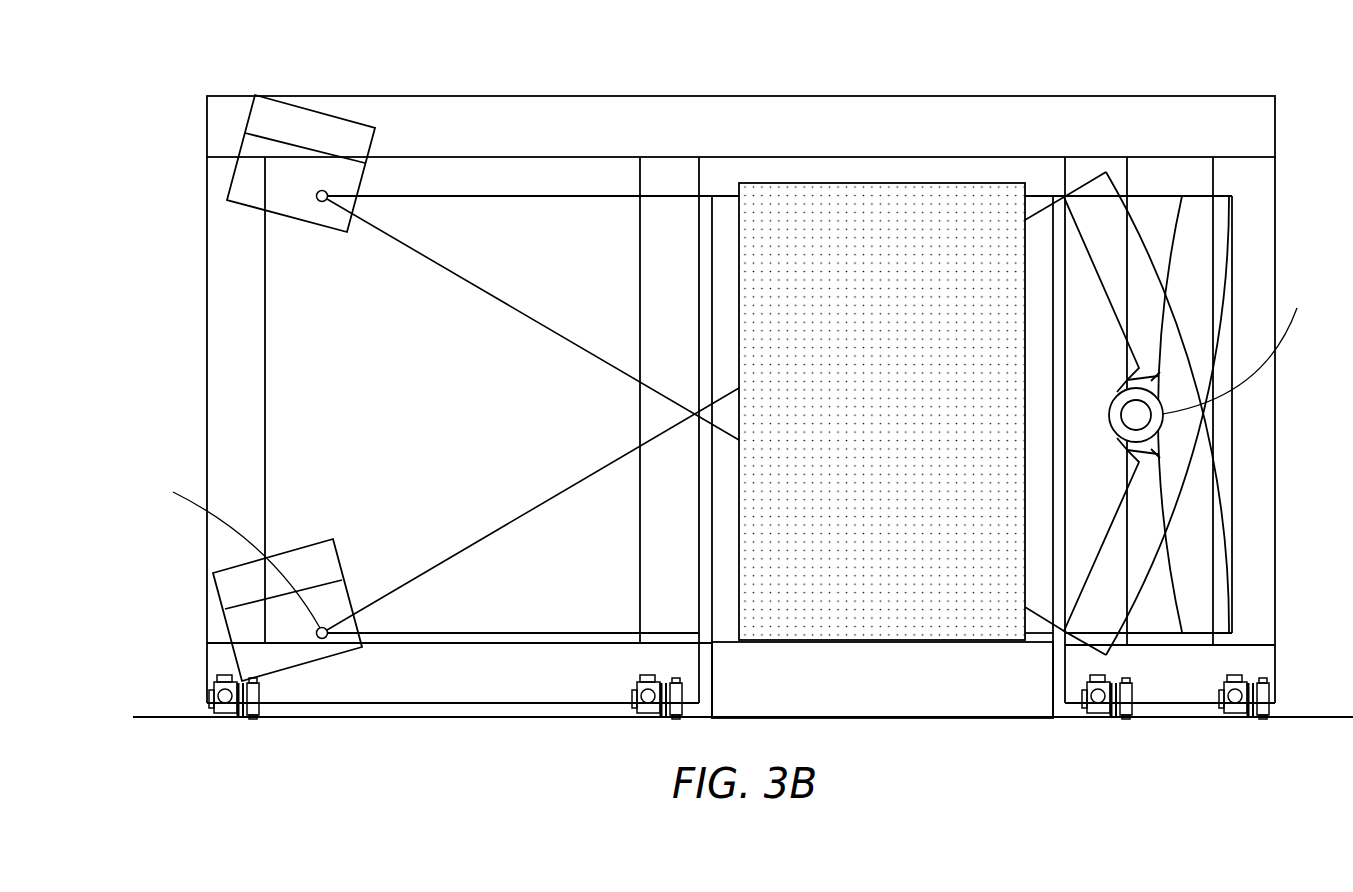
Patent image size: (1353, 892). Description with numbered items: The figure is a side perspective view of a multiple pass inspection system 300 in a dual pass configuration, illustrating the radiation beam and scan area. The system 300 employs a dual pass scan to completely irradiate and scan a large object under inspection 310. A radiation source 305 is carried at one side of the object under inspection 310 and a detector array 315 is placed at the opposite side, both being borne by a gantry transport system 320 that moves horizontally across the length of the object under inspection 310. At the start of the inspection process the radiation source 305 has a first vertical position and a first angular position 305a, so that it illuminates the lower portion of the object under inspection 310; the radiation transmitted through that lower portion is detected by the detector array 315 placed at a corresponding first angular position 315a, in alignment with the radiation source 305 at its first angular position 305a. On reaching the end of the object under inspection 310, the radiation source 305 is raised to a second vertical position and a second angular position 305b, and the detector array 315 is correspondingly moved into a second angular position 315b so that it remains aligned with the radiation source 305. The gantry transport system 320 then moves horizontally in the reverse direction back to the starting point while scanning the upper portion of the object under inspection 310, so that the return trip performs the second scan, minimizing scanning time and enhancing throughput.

The multiple pass inspection system 300 is at (213, 59).
The radiation source 305 is at (242, 652).
The first angular position of radiation source 305a is at (240, 631).
The second angular position of radiation source 305b is at (252, 147).
The object under inspection 310 is at (883, 615).
The detector array 315 is at (1196, 562).
The first angular position of detector array 315a is at (1222, 583).
The second angular position of detector array 315b is at (1223, 223).
The gantry transport system 320 is at (1200, 117).